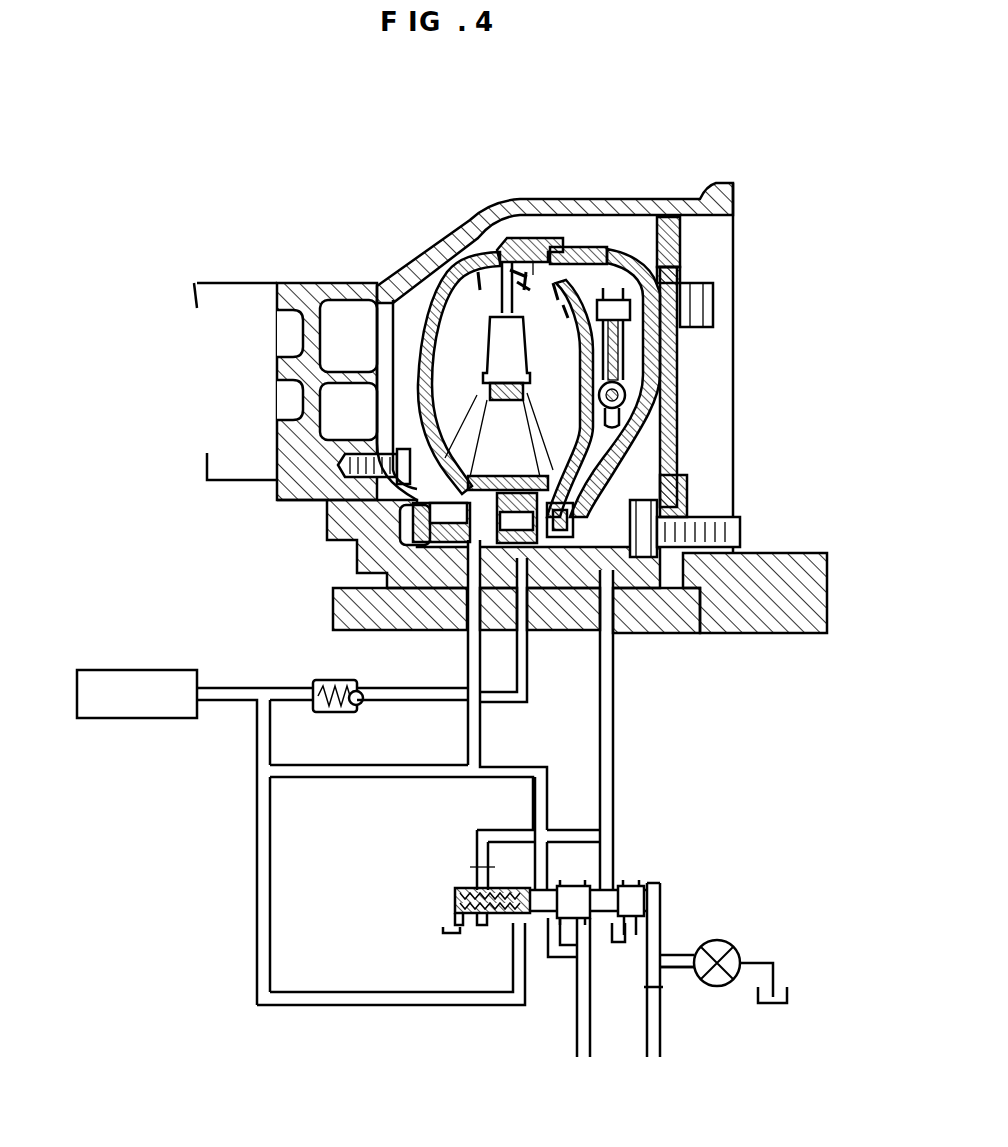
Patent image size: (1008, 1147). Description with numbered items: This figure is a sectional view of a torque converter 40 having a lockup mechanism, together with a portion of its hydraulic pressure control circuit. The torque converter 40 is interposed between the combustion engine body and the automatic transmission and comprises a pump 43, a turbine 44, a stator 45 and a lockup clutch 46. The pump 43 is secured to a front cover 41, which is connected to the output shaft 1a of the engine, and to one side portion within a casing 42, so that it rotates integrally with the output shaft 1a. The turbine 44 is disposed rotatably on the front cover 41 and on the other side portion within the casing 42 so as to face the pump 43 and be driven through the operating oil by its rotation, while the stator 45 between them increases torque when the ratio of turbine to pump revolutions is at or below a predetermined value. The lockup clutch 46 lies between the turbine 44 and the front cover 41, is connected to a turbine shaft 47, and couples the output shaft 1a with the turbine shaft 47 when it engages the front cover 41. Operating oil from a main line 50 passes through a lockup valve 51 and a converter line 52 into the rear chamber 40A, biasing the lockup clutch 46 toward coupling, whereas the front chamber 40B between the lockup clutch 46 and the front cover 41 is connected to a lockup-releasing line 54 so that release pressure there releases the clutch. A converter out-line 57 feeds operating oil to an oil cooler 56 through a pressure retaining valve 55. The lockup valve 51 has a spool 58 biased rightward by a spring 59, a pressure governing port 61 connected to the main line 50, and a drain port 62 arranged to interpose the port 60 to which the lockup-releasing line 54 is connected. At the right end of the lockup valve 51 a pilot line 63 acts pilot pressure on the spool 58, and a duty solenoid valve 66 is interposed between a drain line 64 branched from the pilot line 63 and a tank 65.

The output shaft 1a is at (772, 553).
The torque converter 40 is at (608, 236).
The rear chamber 40A is at (600, 280).
The front chamber 40B is at (660, 455).
The front cover 41 is at (680, 357).
The casing 42 is at (533, 245).
The pump 43 is at (467, 287).
The turbine 44 is at (570, 263).
The stator 45 is at (490, 432).
The lockup clutch 46 is at (643, 400).
The turbine shaft 47 is at (336, 598).
The main line 50 is at (577, 1037).
The lockup valve 51 is at (664, 912).
The converter line 52 is at (480, 747).
The lockup-releasing line 54 is at (613, 713).
The pressure retaining valve 55 is at (338, 683).
The oil cooler 56 is at (146, 710).
The converter out-line 57 is at (527, 665).
The spool 58 is at (633, 886).
The spring 59 is at (450, 890).
The port 60 is at (598, 878).
The pressure governing port 61 is at (577, 927).
The drain port 62 is at (630, 935).
The pilot line 63 is at (660, 940).
The drain line 64 is at (673, 970).
The tank 65 is at (445, 933).
The duty solenoid valve 66 is at (740, 947).